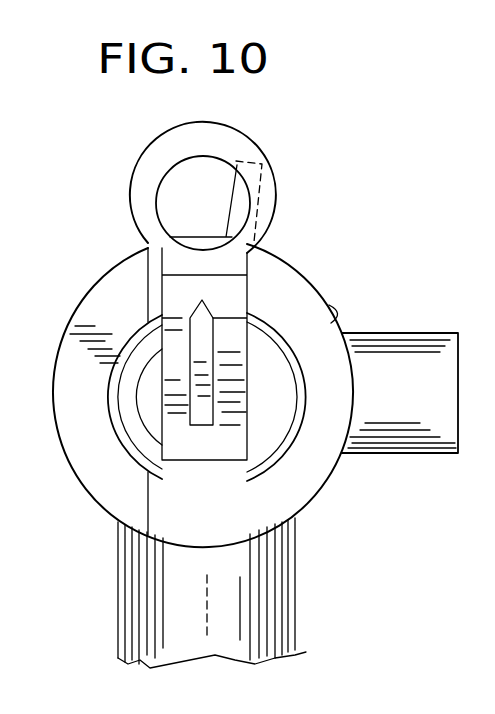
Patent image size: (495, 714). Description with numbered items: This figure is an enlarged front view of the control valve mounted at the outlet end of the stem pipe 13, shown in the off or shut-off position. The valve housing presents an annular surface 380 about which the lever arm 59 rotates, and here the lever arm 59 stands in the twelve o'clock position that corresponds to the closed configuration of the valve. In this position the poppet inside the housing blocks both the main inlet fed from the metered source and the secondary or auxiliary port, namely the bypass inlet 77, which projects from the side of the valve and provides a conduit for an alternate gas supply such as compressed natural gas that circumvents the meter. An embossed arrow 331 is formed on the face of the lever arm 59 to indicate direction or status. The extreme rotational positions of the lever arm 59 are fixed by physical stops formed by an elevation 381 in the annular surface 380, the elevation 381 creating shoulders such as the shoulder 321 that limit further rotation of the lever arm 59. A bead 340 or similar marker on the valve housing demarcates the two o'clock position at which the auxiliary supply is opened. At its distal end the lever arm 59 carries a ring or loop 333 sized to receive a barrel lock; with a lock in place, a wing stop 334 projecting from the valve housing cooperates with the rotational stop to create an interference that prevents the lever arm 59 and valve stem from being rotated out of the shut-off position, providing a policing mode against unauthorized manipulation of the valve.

The outlet stem pipe 13 is at (297, 598).
The ring or loop 333 is at (237, 130).
The wing stop 334 is at (234, 197).
The elevation 381 is at (108, 300).
The annular surface 380 is at (280, 272).
The bead 340 is at (345, 309).
The embossed arrow 331 is at (207, 312).
The lever arm 59 is at (200, 456).
The shoulder 321 is at (149, 516).
The bypass inlet 77 is at (455, 458).